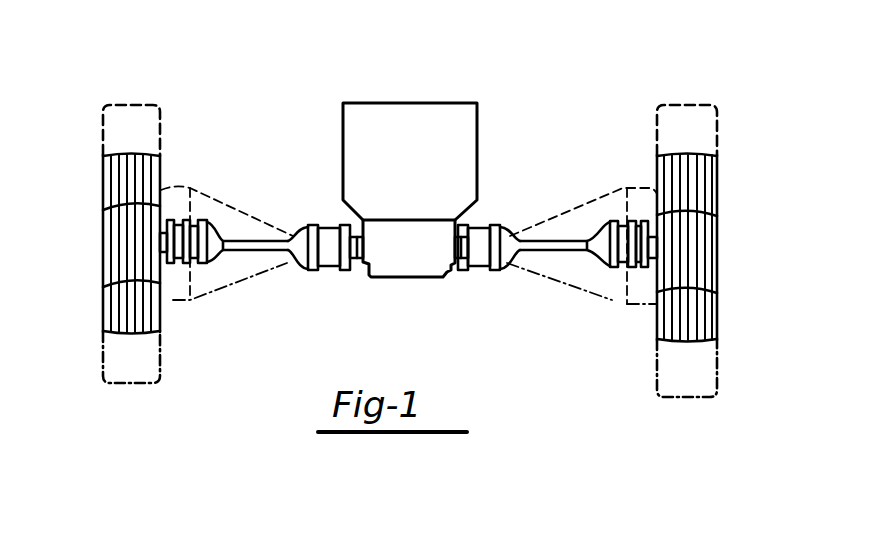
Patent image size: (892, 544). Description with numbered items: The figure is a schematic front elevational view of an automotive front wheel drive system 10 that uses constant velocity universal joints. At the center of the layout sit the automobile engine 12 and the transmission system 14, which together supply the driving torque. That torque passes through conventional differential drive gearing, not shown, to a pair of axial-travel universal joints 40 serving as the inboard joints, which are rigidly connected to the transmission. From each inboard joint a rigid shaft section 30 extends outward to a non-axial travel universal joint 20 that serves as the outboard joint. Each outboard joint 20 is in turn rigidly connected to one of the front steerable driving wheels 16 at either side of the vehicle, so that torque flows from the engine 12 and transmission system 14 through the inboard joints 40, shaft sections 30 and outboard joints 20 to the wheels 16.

The front wheel drive system 10 is at (683, 92).
The engine 12 is at (474, 118).
The transmission system 14 is at (443, 278).
The front steerable driving wheels 16 is at (102, 187).
The non-axial travel universal joints 20 is at (198, 222).
The rigid shaft section 30 is at (255, 251).
The axial-travel universal joints 40 is at (322, 231).